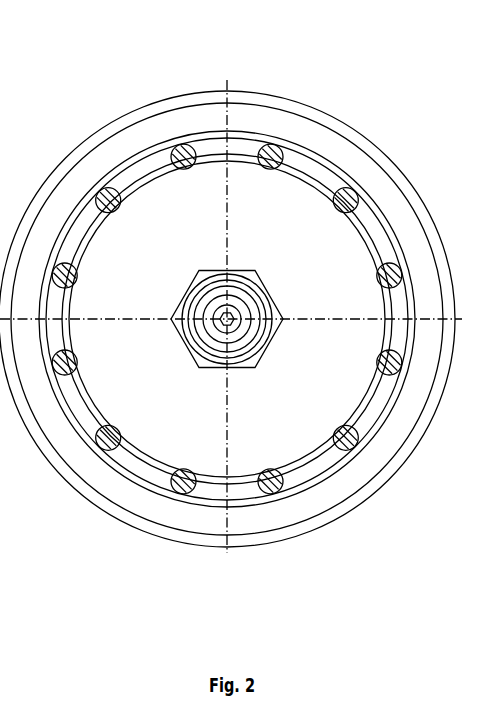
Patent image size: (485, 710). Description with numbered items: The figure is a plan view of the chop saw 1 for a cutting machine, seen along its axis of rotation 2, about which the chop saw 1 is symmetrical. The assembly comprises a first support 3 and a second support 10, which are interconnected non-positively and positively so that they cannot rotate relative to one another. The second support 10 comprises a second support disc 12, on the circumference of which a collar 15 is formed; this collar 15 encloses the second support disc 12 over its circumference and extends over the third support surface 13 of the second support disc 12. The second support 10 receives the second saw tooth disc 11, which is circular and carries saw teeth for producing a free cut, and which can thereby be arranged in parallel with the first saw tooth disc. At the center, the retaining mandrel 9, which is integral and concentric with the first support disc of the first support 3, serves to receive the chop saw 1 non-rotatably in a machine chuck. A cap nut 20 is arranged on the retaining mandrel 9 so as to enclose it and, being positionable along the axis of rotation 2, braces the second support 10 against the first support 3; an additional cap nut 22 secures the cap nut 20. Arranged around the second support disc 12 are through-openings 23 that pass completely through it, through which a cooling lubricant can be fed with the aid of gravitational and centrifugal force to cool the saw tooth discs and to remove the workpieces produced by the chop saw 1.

The chop saw 1 is at (239, 284).
The axis of rotation 2 is at (188, 296).
The first support 3 is at (240, 288).
The retaining mandrel 9 is at (257, 328).
The second support 10 is at (227, 293).
The second saw tooth disc 11 is at (104, 131).
The second support disc 12 is at (390, 220).
The third support surface 13 is at (300, 193).
The collar 15 is at (178, 120).
The cap nut 20 is at (241, 368).
The additional cap nut 22 is at (283, 311).
The through-openings 23 is at (403, 267).